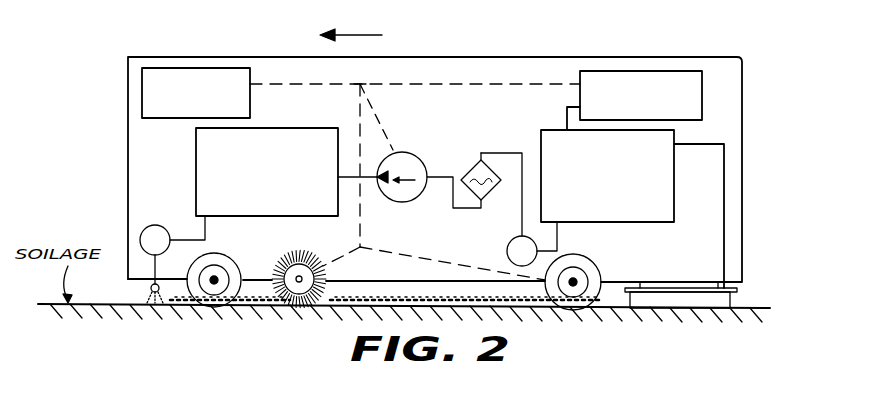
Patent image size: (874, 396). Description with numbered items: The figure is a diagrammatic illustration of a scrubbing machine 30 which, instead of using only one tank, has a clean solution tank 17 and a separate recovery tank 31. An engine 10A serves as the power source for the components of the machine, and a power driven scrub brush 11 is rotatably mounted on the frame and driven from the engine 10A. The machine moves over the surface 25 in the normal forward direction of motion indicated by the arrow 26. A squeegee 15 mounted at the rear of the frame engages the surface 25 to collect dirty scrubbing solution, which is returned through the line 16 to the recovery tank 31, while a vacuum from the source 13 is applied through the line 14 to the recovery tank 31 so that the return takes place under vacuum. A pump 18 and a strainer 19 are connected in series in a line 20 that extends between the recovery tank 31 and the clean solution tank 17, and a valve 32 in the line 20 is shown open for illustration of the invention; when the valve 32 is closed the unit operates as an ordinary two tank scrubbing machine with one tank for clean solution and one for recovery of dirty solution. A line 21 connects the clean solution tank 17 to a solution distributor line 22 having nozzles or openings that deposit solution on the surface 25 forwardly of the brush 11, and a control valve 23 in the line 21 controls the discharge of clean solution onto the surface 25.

The engine 10A is at (250, 103).
The scrub brush 11 is at (322, 275).
The source of vacuum 13 is at (640, 77).
The line 14 is at (567, 118).
The squeegee 15 is at (737, 300).
The line 16 is at (724, 253).
The clean solution tank 17 is at (300, 217).
The pump 18 is at (400, 153).
The strainer 19 is at (483, 158).
The line 20 is at (522, 216).
The line 21 is at (205, 229).
The solution distributor line 22 is at (150, 288).
The control valve 23 is at (147, 226).
The surface 25 is at (758, 308).
The arrow 26 is at (347, 34).
The scrubbing machine 30 is at (751, 73).
The recovery tank 31 is at (620, 223).
The valve 32 is at (507, 251).